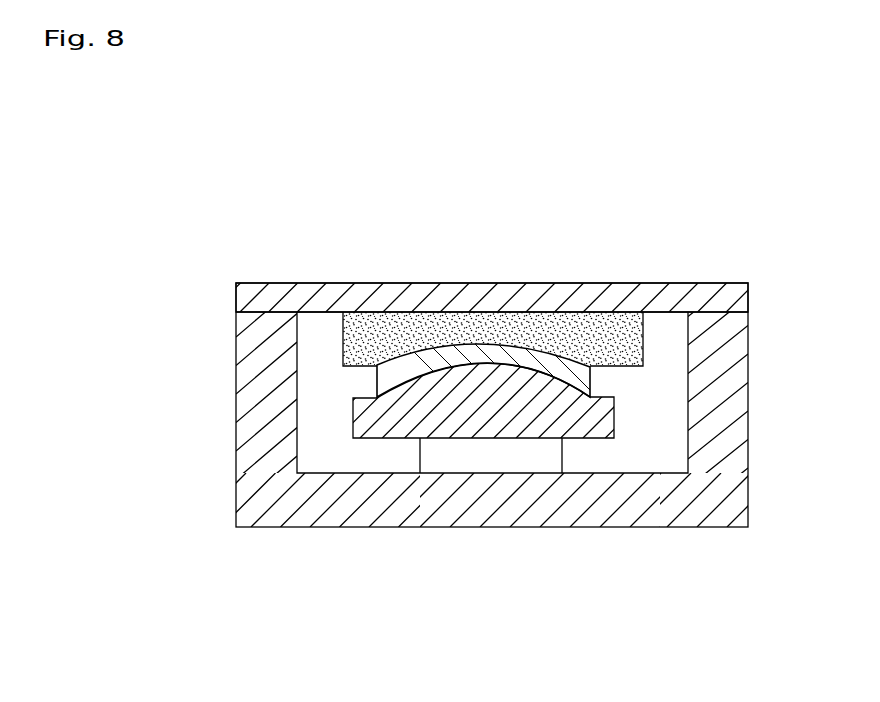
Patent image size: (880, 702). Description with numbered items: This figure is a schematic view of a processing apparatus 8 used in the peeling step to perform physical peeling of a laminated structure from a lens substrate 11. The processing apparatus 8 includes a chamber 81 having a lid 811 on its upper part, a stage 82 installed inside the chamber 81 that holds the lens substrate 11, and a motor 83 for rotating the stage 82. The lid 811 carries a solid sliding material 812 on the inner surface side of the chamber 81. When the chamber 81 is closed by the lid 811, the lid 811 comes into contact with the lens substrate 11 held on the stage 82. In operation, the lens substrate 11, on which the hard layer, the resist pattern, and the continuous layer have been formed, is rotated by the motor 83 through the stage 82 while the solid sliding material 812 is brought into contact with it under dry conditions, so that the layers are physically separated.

The processing apparatus 8 is at (187, 241).
The chamber 81 is at (588, 510).
The lid 811 is at (468, 298).
The solid sliding material 812 is at (577, 323).
The lens substrate 11 is at (587, 383).
The stage 82 is at (372, 428).
The motor 83 is at (490, 460).